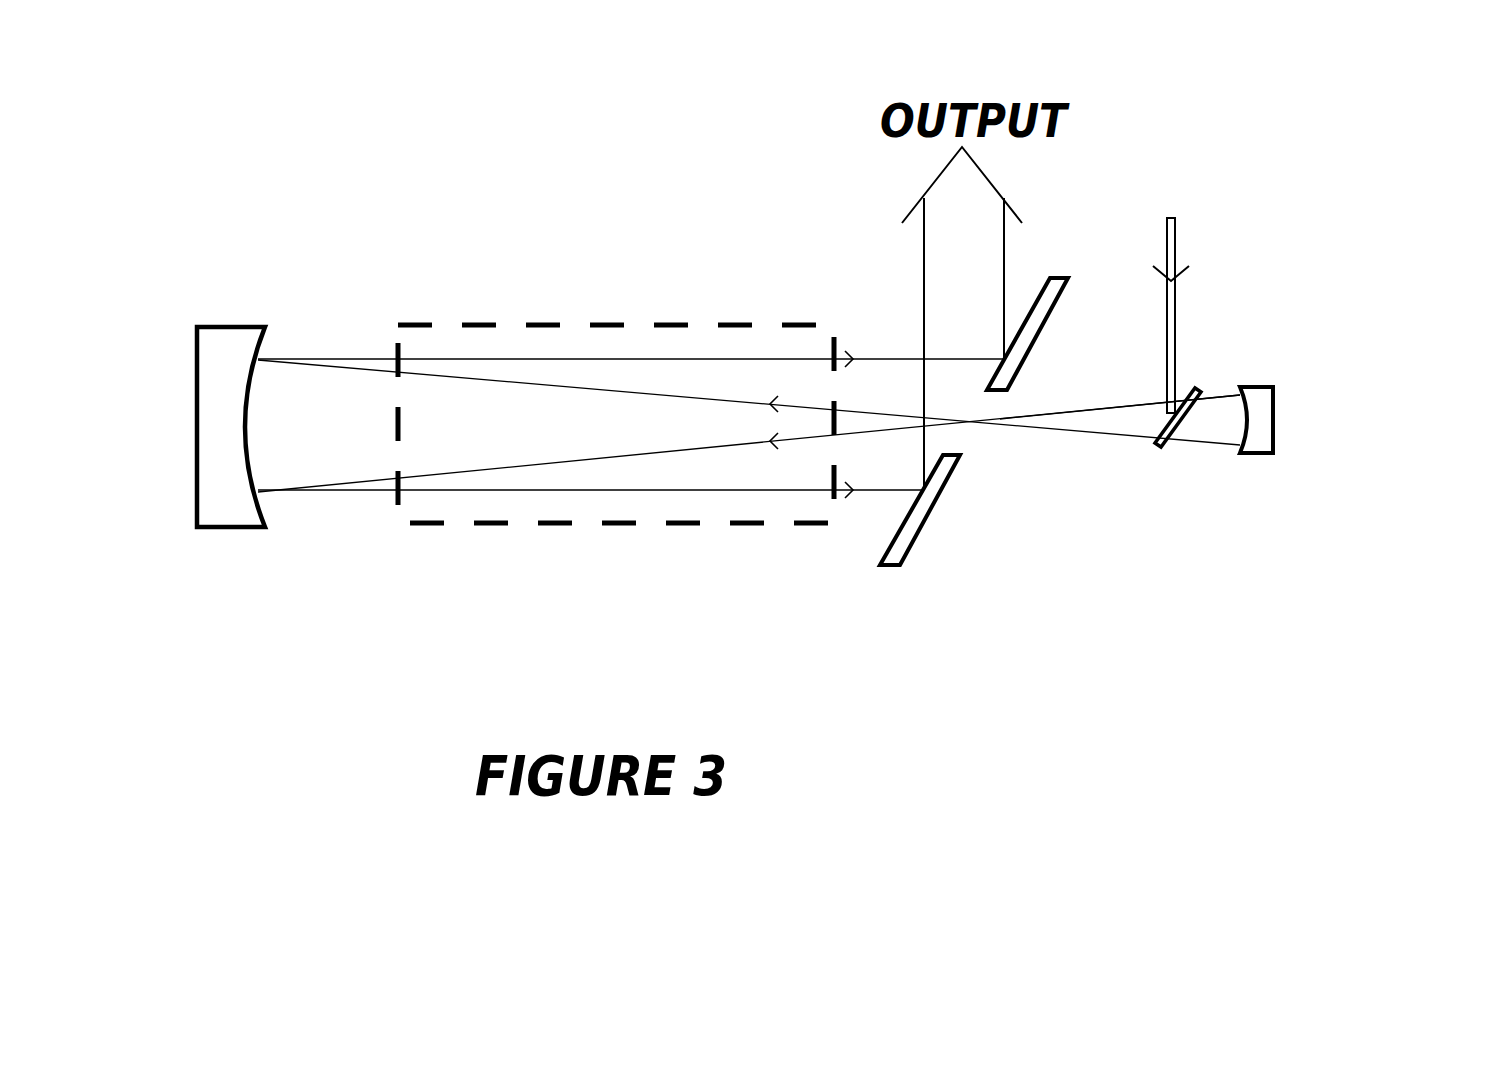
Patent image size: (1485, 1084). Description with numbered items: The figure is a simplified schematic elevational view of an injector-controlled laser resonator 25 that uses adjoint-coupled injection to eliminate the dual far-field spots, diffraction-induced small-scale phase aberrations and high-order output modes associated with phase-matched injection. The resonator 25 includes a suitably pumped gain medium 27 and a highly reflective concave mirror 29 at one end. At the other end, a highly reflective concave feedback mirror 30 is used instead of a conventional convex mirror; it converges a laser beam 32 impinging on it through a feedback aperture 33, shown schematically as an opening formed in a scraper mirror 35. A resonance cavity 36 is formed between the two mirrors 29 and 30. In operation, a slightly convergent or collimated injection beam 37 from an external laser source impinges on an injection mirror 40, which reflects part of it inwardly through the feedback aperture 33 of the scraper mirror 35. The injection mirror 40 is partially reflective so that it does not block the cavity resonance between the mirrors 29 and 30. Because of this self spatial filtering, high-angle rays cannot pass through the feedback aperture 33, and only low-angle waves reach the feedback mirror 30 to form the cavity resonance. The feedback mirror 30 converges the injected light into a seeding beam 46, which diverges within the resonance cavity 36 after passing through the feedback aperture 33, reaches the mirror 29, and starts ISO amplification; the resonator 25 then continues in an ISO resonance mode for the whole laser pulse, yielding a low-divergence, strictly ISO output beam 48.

The injector-controlled laser resonator 25 is at (559, 139).
The gain medium 27 is at (450, 342).
The highly reflective concave mirror 29 is at (213, 357).
The concave feedback mirror 30 is at (1257, 420).
The laser beam 32 is at (1227, 390).
The feedback aperture 33 is at (1014, 450).
The scraper mirror 35 is at (920, 523).
The resonance cavity 36 is at (903, 310).
The injection beam 37 is at (1172, 248).
The injection mirror 40 is at (1175, 428).
The seeding beam 46 is at (1095, 435).
The ISO output beam 48 is at (968, 223).